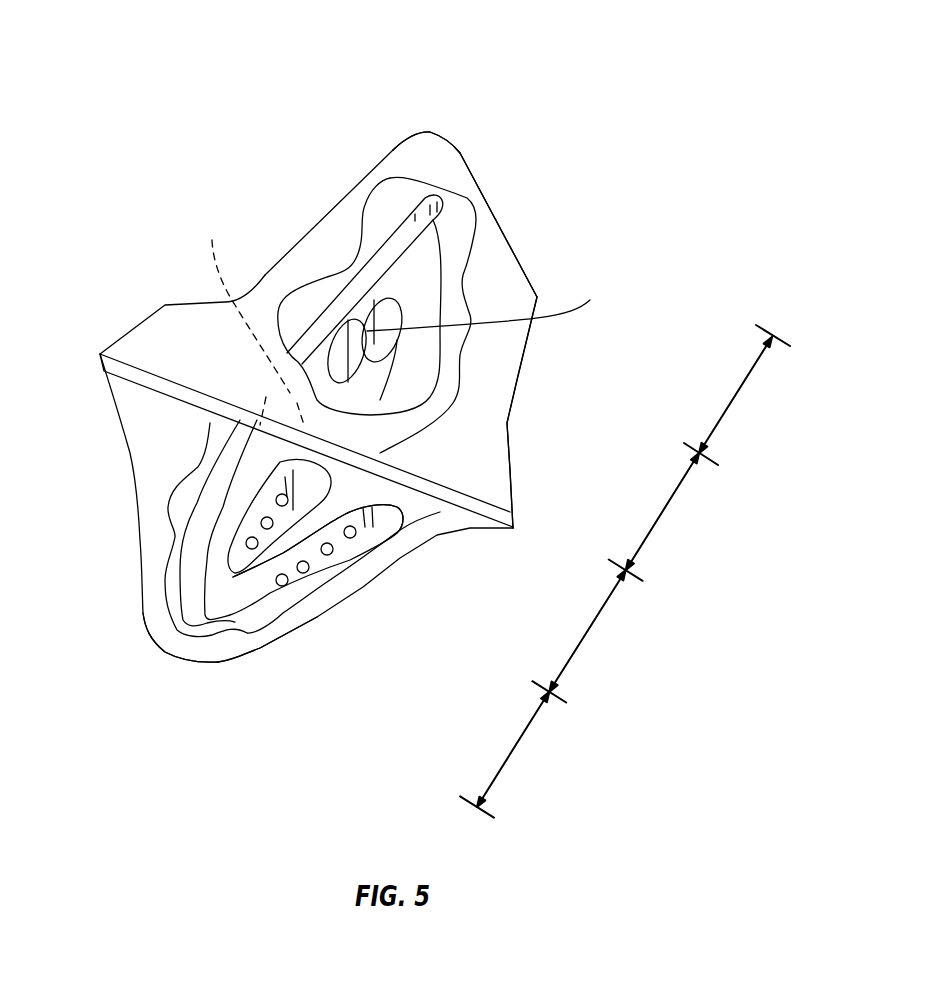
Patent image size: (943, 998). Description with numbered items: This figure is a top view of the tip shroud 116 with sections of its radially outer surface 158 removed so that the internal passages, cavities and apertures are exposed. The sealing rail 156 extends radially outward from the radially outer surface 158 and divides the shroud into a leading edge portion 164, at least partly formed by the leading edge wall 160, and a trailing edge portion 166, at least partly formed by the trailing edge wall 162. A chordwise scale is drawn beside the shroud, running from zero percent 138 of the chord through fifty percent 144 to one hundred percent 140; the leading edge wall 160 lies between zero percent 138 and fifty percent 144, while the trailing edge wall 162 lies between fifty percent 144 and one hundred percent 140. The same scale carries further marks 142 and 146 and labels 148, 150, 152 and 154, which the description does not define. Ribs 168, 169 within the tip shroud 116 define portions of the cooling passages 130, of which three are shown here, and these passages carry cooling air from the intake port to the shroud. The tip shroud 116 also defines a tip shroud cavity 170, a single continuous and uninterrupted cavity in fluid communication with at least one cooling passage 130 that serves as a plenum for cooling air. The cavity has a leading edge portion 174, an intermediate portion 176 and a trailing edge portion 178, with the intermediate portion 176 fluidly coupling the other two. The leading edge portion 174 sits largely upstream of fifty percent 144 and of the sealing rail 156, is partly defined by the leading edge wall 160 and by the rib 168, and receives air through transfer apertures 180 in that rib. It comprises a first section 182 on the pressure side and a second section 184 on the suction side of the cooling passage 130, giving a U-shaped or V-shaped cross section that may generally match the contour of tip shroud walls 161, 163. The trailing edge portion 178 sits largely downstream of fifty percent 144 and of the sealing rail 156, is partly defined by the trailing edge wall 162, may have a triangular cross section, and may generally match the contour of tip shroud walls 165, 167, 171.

The tip shroud 116 is at (137, 150).
The cooling passages 130 is at (327, 317).
The zero percent of the chord 138 is at (497, 817).
The one hundred percent of the chord 140 is at (760, 328).
The first intermediate position 142 is at (567, 693).
The fifty percent of the chord 144 is at (643, 580).
The third intermediate position 146 is at (683, 444).
The first span segment 148 is at (540, 717).
The second span segment 150 is at (587, 637).
The third span segment 152 is at (660, 517).
The fourth span segment 154 is at (738, 406).
The sealing rail 156 is at (130, 373).
The radially outer surface 158 is at (218, 338).
The leading edge wall 160 is at (163, 602).
The tip shroud wall 161 is at (250, 650).
The trailing edge wall 162 is at (473, 205).
The tip shroud wall 163 is at (137, 493).
The leading edge portion of the tip shroud 164 is at (163, 647).
The tip shroud wall 165 is at (520, 373).
The trailing edge portion of the tip shroud 166 is at (437, 117).
The tip shroud wall 167 is at (503, 223).
The rib 168 is at (210, 590).
The rib 169 is at (489, 302).
The tip shroud cavity 170 is at (414, 297).
The tip shroud wall 171 is at (383, 163).
The leading edge portion of the tip shroud cavity 174 is at (213, 543).
The intermediate portion of the tip shroud cavity 176 is at (251, 304).
The trailing edge portion of the tip shroud cavity 178 is at (400, 273).
The transfer apertures 180 is at (288, 512).
The first section 182 is at (385, 517).
The second section 184 is at (243, 480).